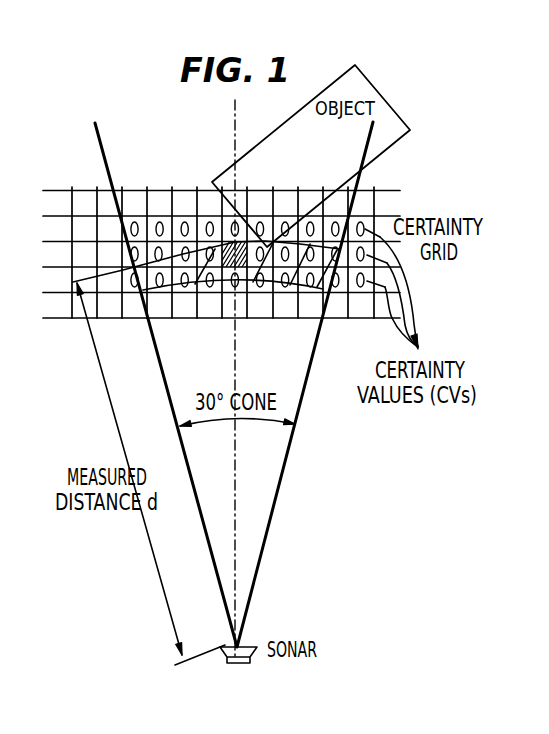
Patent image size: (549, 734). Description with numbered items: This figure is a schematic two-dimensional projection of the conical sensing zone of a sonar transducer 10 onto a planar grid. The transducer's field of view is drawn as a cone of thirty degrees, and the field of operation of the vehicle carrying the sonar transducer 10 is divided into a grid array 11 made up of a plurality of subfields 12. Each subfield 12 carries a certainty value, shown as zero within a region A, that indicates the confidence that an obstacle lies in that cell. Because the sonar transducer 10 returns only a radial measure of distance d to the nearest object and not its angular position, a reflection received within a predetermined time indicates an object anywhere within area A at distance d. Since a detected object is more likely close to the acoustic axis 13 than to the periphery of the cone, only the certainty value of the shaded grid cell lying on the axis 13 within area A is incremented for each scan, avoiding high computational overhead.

The sonar transducer 10 is at (240, 664).
The grid array 11 is at (132, 182).
The subfields 12 is at (156, 190).
The acoustic axis 13 is at (236, 354).